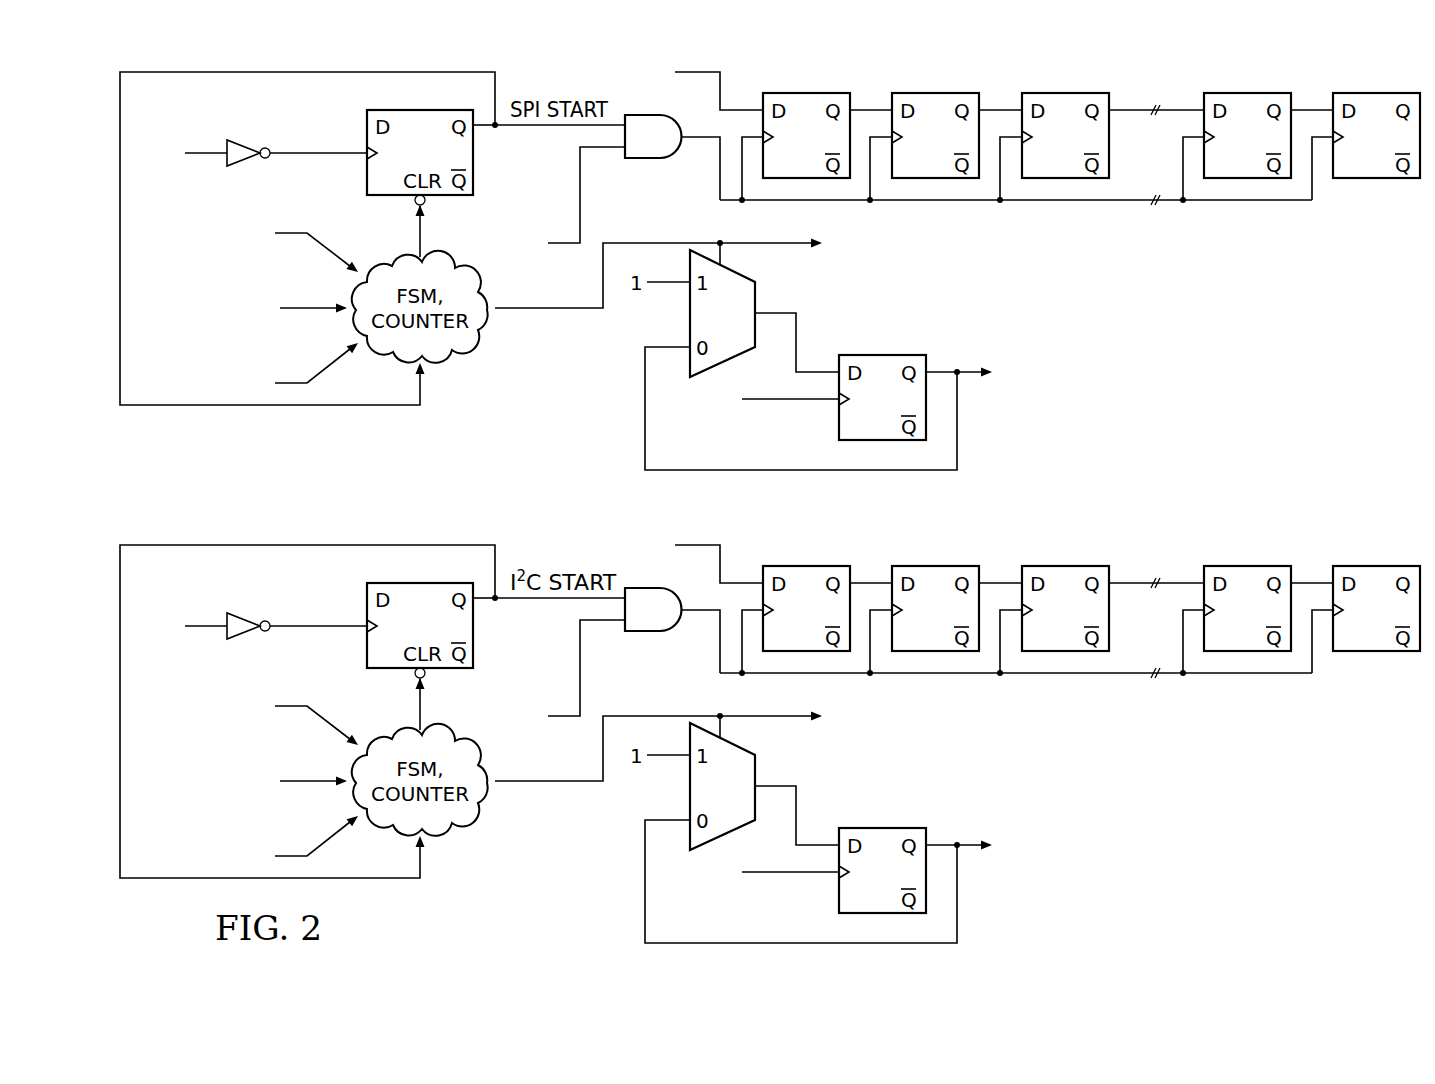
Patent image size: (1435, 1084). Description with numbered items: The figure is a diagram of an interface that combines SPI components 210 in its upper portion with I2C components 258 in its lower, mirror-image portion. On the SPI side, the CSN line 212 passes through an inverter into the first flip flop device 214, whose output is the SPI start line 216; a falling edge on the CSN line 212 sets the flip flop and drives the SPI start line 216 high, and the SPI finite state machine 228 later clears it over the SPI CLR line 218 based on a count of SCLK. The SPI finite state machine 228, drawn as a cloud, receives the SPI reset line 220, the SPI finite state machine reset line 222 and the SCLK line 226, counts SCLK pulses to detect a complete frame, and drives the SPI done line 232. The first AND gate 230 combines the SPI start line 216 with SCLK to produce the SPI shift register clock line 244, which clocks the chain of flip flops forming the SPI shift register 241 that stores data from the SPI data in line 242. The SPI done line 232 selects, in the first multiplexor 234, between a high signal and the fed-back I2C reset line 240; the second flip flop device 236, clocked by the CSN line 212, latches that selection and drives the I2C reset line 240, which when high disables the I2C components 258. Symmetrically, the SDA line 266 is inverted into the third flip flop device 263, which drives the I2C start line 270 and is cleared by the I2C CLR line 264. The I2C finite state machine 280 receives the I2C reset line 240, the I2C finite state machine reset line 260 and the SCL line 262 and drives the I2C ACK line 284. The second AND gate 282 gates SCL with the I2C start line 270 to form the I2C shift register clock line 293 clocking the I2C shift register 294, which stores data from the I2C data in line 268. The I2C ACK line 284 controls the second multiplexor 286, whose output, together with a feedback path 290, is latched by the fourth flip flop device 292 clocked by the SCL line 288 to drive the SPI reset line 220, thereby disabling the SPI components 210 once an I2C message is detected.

The SPI components 210 is at (1143, 396).
The CSN line 212 is at (200, 152).
The first flip flop device 214 is at (367, 117).
The SPI start line 216 is at (120, 225).
The SPI CLR line 218 is at (420, 240).
The SPI reset line 220 is at (291, 233).
The SPI finite state machine reset line 222 is at (309, 308).
The SCLK line 226 is at (292, 383).
The SPI finite state machine 228 is at (487, 344).
The first AND gate 230 is at (640, 160).
The SPI done line 232 is at (700, 243).
The first multiplexor 234 is at (758, 292).
The second flip flop device 236 is at (880, 355).
The I2C reset line 240 is at (645, 410).
The SPI shift register 241 is at (1079, 226).
The SPI data in line 242 is at (722, 90).
The SPI shift register clock line 244 is at (957, 204).
The I2C components 258 is at (278, 508).
The I2C finite state machine reset line 260 is at (237, 758).
The SCL line 262 is at (292, 856).
The third flip flop device 263 is at (397, 619).
The I2C CLR line 264 is at (387, 699).
The SDA line 266 is at (181, 599).
The I2C data in line 268 is at (676, 555).
The I2C start line 270 is at (271, 711).
The I2C finite state machine 280 is at (441, 791).
The second AND gate 282 is at (664, 637).
The I2C ACK line 284 is at (703, 720).
The second multiplexor 286 is at (734, 786).
The SCL line 288 is at (768, 891).
The feedback line 290 is at (766, 881).
The fourth flip flop device 292 is at (882, 844).
The I2C shift register clock line 293 is at (1026, 669).
The I2C shift register 294 is at (1091, 643).